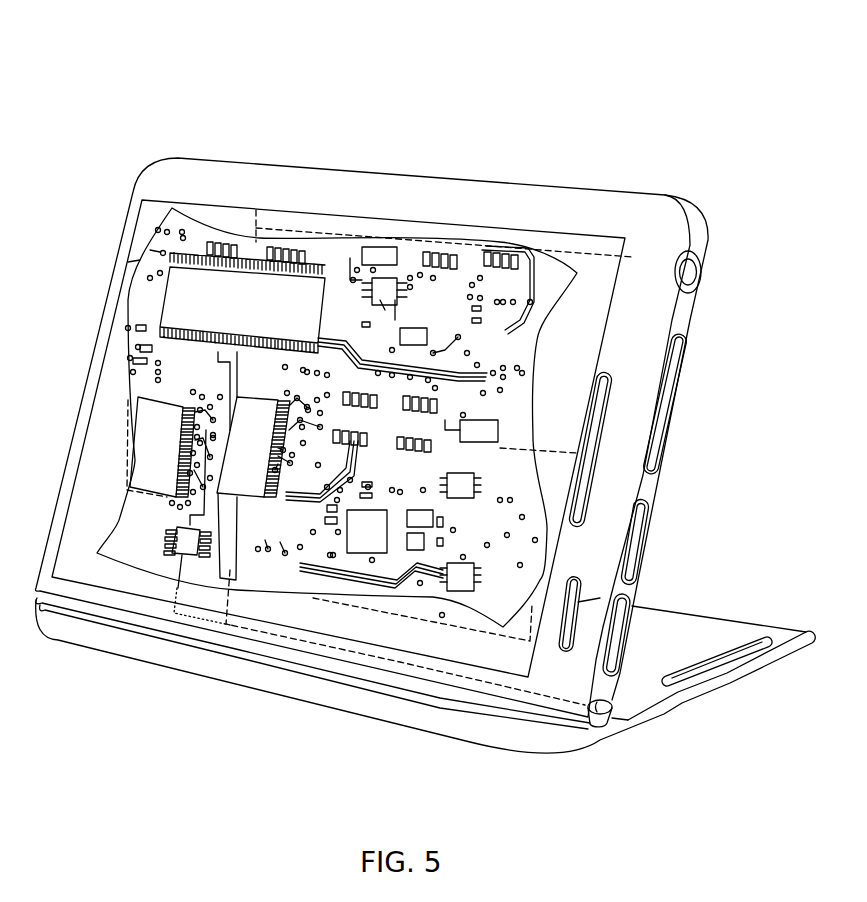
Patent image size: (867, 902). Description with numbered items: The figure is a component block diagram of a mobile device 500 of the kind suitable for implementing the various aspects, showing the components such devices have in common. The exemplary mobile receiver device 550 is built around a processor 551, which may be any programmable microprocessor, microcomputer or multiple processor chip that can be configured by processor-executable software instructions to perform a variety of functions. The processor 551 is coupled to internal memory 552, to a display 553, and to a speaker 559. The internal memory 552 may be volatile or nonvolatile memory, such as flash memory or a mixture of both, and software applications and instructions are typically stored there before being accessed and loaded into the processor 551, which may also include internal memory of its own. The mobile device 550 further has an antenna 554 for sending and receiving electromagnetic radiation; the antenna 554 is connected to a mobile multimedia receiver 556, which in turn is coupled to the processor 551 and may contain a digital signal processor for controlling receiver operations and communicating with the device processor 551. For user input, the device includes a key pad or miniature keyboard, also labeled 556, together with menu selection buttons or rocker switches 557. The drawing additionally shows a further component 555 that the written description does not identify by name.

The mobile device 500 is at (661, 64).
The mobile receiver device 550 is at (648, 194).
The processor 551 is at (258, 312).
The internal memory 552 is at (178, 427).
The display 553 is at (490, 224).
The antenna 554 is at (606, 724).
The connector 555 is at (270, 444).
The mobile multimedia receiver 556 is at (185, 548).
The rocker switches 557 is at (578, 602).
The speaker 559 is at (607, 378).